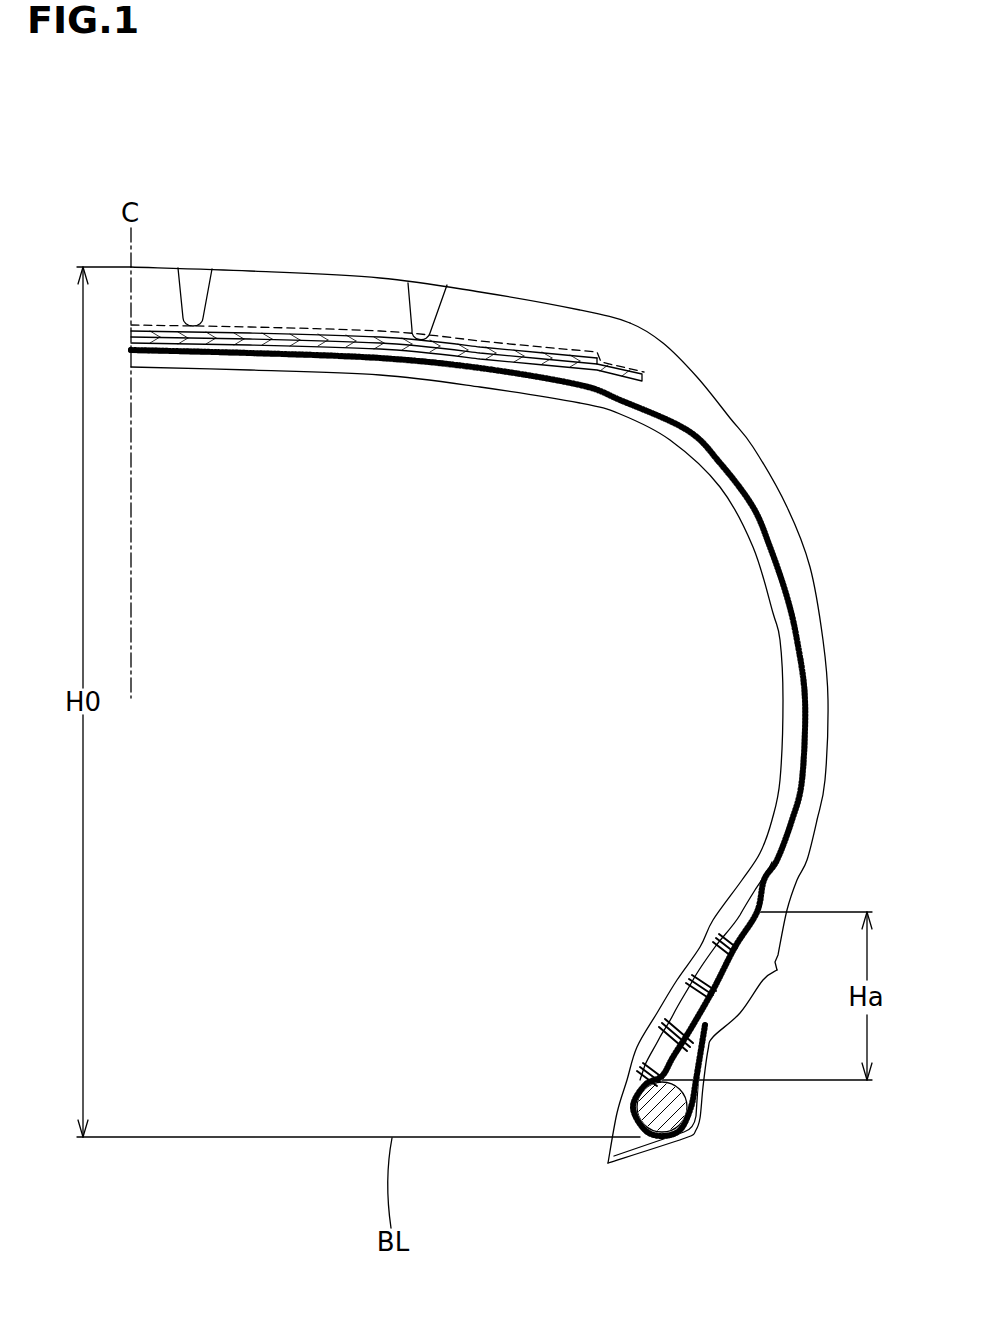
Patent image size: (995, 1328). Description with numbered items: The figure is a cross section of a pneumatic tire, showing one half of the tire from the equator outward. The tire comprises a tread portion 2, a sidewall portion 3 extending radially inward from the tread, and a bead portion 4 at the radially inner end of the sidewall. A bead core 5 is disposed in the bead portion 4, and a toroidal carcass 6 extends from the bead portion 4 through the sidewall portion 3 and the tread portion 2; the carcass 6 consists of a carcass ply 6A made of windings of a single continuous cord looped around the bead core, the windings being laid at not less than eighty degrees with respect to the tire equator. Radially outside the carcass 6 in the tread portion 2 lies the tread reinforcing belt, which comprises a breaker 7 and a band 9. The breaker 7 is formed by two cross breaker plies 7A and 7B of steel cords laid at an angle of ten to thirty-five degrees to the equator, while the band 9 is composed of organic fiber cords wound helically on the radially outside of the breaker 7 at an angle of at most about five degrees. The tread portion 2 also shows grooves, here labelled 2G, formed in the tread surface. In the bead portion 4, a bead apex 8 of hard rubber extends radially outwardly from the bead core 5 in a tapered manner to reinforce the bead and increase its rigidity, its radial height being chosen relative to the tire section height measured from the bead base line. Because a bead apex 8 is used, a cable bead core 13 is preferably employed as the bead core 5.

The tread portion 2 is at (510, 694).
The tread groove 2G is at (337, 296).
The sidewall portion 3 is at (832, 568).
The bead portion 4 is at (632, 1114).
The bead core 5 is at (675, 1164).
The cable bead core 13 is at (667, 1108).
The carcass 6 is at (468, 743).
The carcass ply 6A is at (788, 603).
The breaker 7 is at (386, 424).
The breaker ply 7A is at (297, 342).
The breaker ply 7B is at (365, 347).
The bead apex 8 is at (708, 967).
The band 9 is at (261, 327).